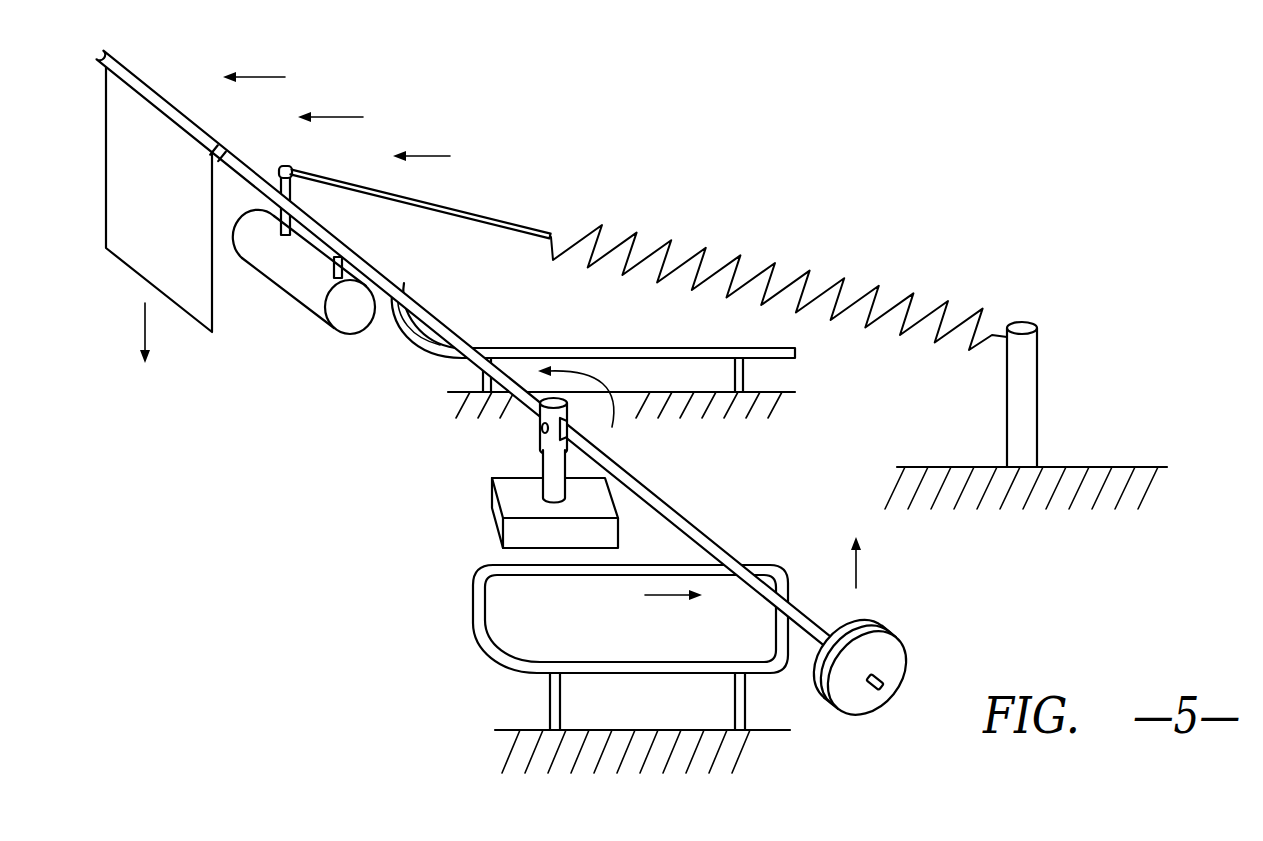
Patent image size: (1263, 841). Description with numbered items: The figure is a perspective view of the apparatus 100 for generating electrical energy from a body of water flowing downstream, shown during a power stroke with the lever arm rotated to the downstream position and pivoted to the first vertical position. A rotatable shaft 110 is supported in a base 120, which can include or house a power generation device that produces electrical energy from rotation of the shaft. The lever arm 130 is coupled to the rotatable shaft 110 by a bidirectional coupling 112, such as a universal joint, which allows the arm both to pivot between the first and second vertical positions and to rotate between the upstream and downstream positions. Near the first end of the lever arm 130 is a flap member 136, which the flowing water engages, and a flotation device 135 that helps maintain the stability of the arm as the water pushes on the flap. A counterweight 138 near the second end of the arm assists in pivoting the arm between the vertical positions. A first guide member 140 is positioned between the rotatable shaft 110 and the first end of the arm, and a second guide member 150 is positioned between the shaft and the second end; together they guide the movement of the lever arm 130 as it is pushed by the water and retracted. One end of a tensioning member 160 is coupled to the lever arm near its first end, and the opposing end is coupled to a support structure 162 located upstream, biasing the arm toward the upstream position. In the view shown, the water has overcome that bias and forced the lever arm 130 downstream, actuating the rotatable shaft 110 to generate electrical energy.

The apparatus 100 is at (604, 412).
The rotatable shaft 110 is at (568, 450).
The bidirectional coupling 112 is at (538, 418).
The base 120 is at (497, 503).
The lever arm 130 is at (690, 520).
The flotation device 135 is at (303, 283).
The flap member 136 is at (117, 168).
The counterweight 138 is at (887, 628).
The first guide member 140 is at (503, 348).
The second guide member 150 is at (472, 588).
The tensioning member 160 is at (895, 303).
The support structure 162 is at (1037, 433).